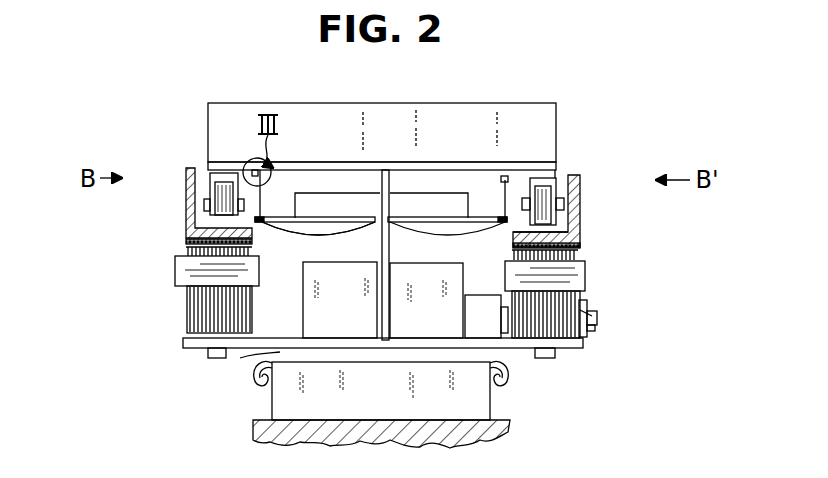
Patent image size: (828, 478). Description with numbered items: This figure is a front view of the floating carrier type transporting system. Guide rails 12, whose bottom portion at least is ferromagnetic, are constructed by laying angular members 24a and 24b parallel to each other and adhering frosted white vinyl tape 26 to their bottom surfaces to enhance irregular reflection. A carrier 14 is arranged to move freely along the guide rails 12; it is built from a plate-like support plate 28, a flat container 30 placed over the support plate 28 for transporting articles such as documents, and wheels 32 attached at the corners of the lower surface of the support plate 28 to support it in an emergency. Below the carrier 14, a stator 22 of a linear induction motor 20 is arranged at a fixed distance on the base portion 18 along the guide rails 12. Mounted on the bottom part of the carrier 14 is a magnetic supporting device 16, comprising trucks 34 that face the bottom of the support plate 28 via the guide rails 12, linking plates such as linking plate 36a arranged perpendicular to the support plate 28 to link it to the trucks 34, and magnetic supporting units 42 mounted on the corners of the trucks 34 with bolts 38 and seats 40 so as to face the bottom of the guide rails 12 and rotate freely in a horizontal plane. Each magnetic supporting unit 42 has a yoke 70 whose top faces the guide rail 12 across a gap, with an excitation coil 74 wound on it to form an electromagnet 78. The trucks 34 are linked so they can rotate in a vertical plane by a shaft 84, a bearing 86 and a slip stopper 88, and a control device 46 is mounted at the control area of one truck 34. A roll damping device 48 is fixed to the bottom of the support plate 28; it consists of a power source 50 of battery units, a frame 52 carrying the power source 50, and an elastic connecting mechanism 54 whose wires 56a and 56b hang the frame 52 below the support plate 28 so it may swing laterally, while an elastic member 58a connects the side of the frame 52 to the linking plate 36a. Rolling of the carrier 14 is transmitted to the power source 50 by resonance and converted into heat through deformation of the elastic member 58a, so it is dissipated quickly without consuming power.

The guide rails 12 is at (580, 226).
The carrier 14 is at (538, 103).
The magnetic supporting device 16 is at (553, 362).
The base portion 18 is at (500, 420).
The linear induction motor 20 is at (242, 357).
The stator 22 is at (262, 392).
The angular member 24a is at (186, 172).
The angular member 24b is at (578, 186).
The white vinyl tape 26 is at (186, 238).
The support plate 28 is at (212, 168).
The flat container 30 is at (418, 103).
The wheels 32 is at (537, 217).
The truck 34 is at (185, 348).
The linking plate 36a is at (380, 250).
The bolts 38 is at (210, 358).
The seats 40 is at (185, 336).
The magnetic supporting unit 42 is at (598, 318).
The control device 46 is at (436, 290).
The roll damping device 48 is at (444, 190).
The power source 50 is at (330, 193).
The frame 52 is at (434, 215).
The elastic connecting mechanism 54 is at (300, 262).
The wire 56a is at (256, 220).
The wire 56b is at (505, 207).
The elastic member 58a is at (316, 255).
The yoke 70 is at (187, 300).
The excitation coil 74 is at (175, 266).
The electromagnet 78 is at (186, 313).
The shaft 84 is at (592, 311).
The bearing 86 is at (500, 298).
The slip stopper 88 is at (592, 330).